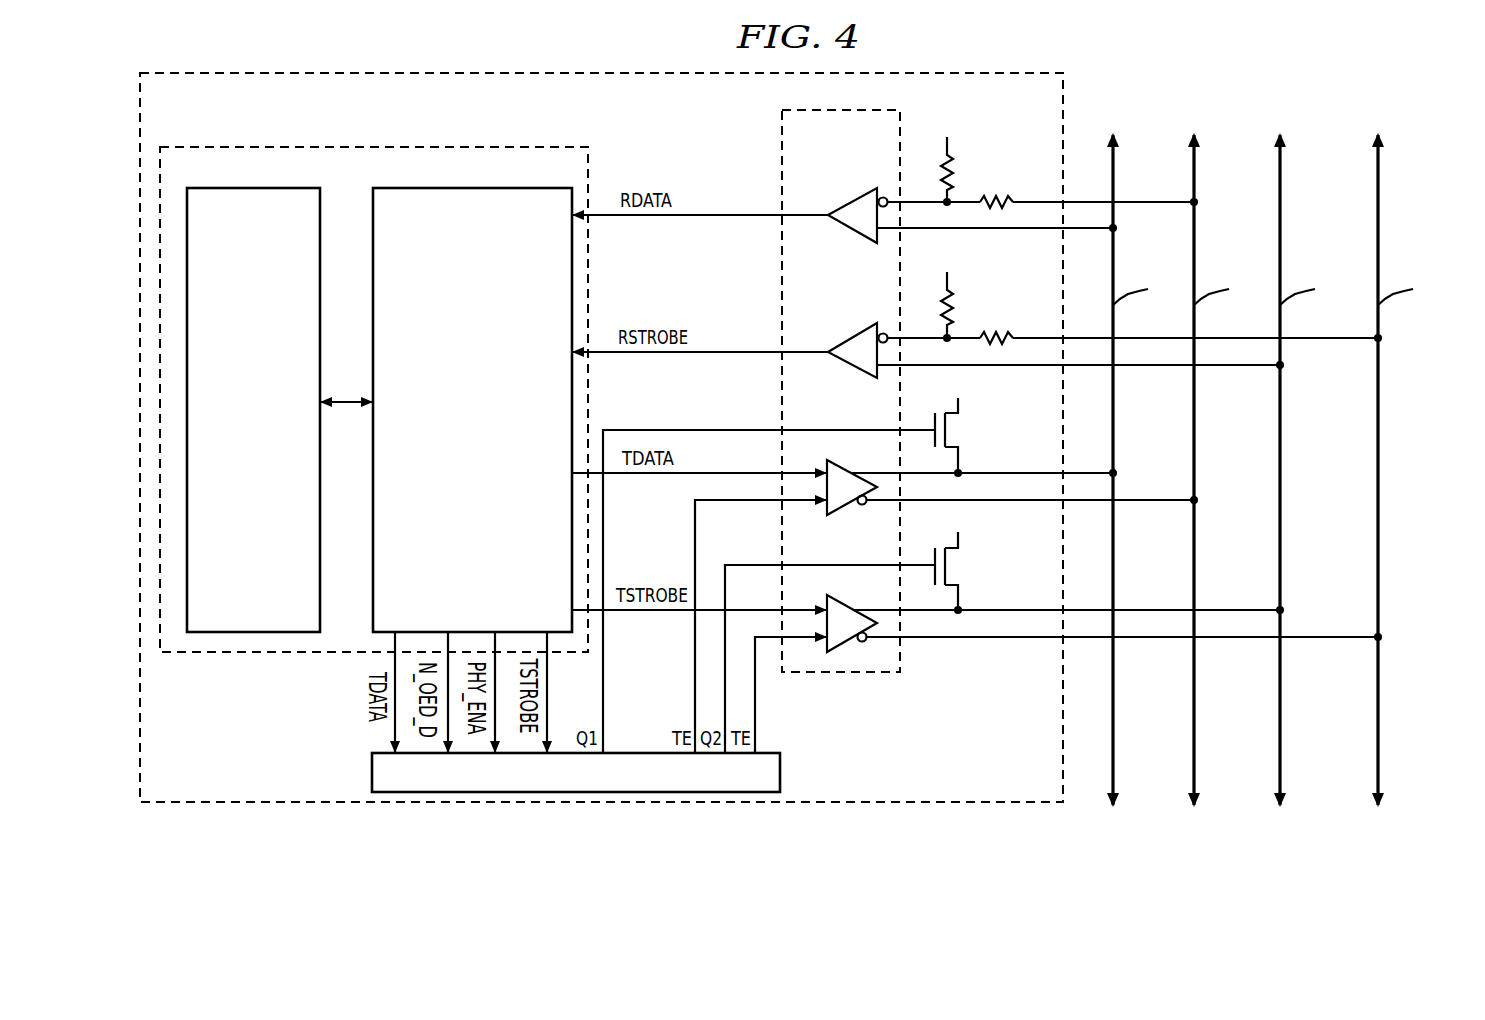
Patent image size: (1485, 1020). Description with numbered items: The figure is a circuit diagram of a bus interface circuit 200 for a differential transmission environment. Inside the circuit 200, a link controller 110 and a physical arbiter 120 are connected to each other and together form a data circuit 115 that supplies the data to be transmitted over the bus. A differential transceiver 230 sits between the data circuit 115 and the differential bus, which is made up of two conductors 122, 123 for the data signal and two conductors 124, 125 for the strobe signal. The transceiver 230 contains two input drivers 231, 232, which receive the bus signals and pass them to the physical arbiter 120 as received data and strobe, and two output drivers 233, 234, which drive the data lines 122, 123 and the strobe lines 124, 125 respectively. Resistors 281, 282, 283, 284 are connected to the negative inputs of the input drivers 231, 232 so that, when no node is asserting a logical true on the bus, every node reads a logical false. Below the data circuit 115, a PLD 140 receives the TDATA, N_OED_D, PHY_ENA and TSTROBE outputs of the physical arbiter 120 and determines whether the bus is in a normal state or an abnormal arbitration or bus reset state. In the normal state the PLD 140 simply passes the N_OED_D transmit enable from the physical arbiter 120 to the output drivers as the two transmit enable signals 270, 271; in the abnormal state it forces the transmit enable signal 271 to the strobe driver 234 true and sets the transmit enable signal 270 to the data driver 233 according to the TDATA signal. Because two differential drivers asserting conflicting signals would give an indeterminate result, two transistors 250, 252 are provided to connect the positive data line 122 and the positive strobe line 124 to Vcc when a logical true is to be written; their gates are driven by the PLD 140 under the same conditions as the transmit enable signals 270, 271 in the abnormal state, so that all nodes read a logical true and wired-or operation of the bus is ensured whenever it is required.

The circuit 200 is at (612, 104).
The data circuit 115 is at (192, 147).
The link controller 110 is at (278, 188).
The physical arbiter 120 is at (498, 188).
The PLD 140 is at (780, 777).
The differential transceiver 230 is at (782, 132).
The input driver 231 is at (850, 198).
The input driver 232 is at (850, 333).
The output driver 233 is at (827, 463).
The output driver 234 is at (827, 600).
The transistor 250 is at (963, 432).
The transistor 252 is at (963, 565).
The transmit enable signal 270 is at (695, 668).
The transmit enable signal 271 is at (755, 708).
The resistor 281 is at (958, 160).
The resistor 282 is at (998, 200).
The resistor 283 is at (958, 296).
The resistor 284 is at (998, 336).
The positive data line 122 is at (1116, 163).
The data line 123 is at (1197, 163).
The positive strobe line 124 is at (1283, 163).
The strobe line 125 is at (1381, 163).